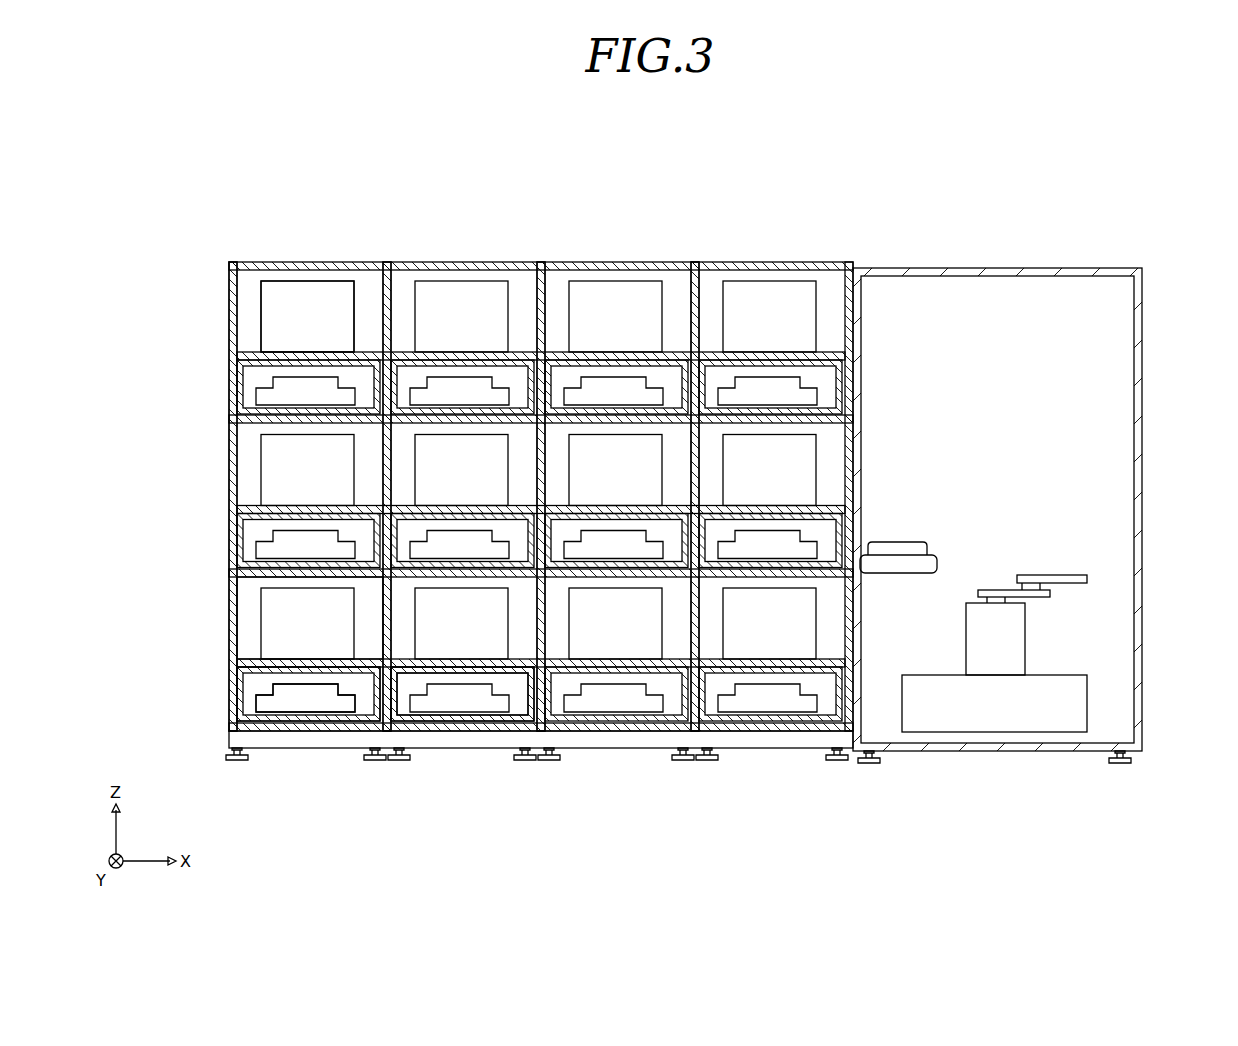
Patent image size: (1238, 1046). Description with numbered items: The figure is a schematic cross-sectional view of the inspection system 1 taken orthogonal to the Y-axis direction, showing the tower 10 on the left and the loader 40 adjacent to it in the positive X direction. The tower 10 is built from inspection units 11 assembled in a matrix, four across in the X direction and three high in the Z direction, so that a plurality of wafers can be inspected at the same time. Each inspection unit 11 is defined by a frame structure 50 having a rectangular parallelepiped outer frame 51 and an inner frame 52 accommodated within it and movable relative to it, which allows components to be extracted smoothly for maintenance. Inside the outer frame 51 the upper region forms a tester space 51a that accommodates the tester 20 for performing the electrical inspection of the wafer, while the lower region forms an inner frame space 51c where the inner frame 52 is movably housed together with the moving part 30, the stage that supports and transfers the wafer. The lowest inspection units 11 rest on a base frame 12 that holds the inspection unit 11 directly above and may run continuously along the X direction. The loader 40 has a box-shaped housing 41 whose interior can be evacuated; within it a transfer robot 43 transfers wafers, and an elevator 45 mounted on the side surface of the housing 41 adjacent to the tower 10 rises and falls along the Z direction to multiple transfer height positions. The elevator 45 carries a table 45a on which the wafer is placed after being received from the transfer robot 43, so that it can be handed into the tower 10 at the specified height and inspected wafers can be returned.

The inspection system 1 is at (289, 160).
The tower 10 is at (848, 249).
The inspection unit 11 is at (228, 613).
The base frame 12 is at (243, 737).
The tester 20 is at (260, 308).
The moving part 30 is at (302, 705).
The loader 40 is at (1031, 489).
The housing 41 is at (1139, 354).
The transfer robot 43 is at (1025, 631).
The elevator 45 is at (929, 533).
The table 45a is at (931, 541).
The frame structure 50 is at (462, 754).
The outer frame 51 is at (437, 727).
The tester space 51a is at (248, 628).
The inner frame space 51c is at (240, 688).
The inner frame 52 is at (468, 722).